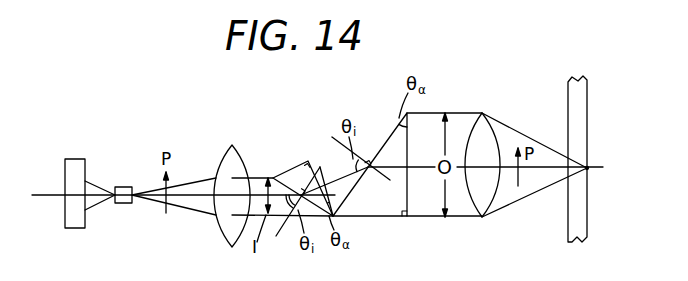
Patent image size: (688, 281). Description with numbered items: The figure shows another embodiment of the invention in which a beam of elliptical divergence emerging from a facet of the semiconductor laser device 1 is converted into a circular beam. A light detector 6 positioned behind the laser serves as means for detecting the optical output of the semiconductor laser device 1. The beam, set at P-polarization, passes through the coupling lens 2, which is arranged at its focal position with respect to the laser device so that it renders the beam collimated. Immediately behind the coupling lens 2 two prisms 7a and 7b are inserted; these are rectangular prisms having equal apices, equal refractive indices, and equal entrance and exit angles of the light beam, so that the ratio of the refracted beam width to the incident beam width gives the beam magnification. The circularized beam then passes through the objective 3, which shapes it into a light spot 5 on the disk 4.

The light detector 6 is at (74, 163).
The semiconductor laser device 1 is at (126, 187).
The coupling lens 2 is at (236, 167).
The first prism 7a is at (299, 165).
The second prism 7b is at (401, 218).
The objective 3 is at (486, 202).
The disk 4 is at (581, 108).
The light spot 5 is at (590, 172).